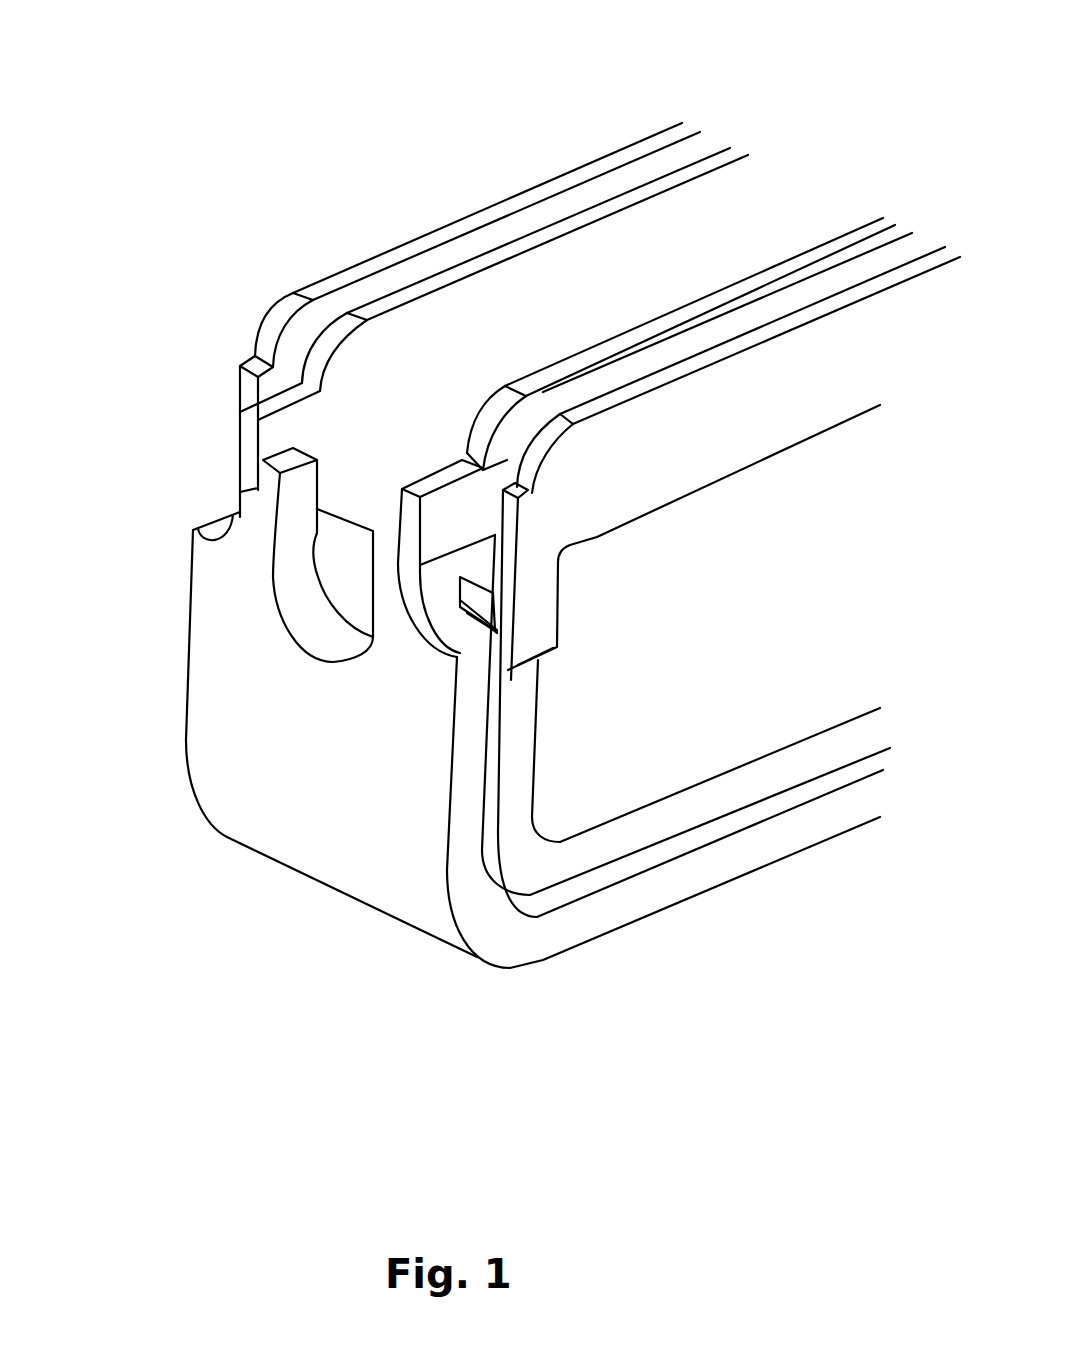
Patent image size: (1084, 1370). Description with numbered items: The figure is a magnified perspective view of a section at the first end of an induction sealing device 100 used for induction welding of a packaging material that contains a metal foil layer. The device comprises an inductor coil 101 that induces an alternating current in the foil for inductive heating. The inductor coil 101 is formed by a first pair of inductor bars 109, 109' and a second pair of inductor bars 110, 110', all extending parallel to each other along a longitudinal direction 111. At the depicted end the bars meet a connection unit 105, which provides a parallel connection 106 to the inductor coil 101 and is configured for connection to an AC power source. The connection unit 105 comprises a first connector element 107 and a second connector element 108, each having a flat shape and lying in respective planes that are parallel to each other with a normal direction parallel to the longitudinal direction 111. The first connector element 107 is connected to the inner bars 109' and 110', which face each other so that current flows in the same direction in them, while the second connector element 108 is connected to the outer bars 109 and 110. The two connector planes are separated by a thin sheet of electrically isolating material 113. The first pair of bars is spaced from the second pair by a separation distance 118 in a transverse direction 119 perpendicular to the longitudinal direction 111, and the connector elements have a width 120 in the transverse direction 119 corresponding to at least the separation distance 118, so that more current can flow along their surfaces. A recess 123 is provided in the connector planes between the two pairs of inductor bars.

The induction sealing device 100 is at (192, 60).
The inductor coil 101 is at (548, 156).
The connection unit 105 is at (250, 687).
The parallel connection 106 is at (308, 661).
The first connector element 107 is at (198, 596).
The second connector element 108 is at (527, 730).
The inductor bar 109 is at (477, 245).
The inductor bar 109' is at (494, 284).
The inductor bar 110 is at (738, 347).
The inductor bar 110' is at (681, 344).
The longitudinal direction 111 is at (293, 383).
The sheet of electrically isolating material 113 is at (487, 777).
The separation distance 118 is at (373, 323).
The transverse direction 119 is at (467, 453).
The width 120 is at (192, 708).
The recess 123 is at (307, 590).